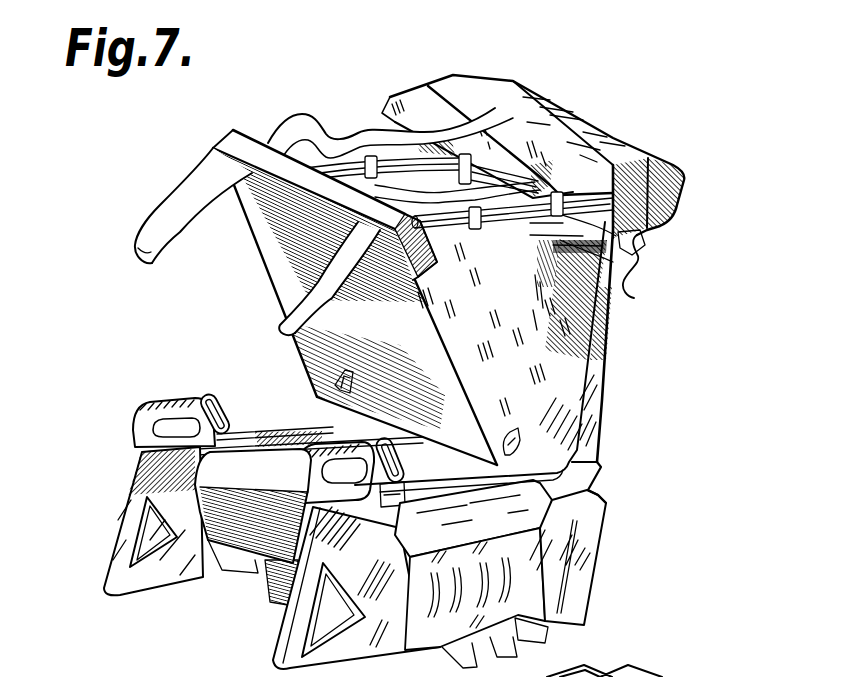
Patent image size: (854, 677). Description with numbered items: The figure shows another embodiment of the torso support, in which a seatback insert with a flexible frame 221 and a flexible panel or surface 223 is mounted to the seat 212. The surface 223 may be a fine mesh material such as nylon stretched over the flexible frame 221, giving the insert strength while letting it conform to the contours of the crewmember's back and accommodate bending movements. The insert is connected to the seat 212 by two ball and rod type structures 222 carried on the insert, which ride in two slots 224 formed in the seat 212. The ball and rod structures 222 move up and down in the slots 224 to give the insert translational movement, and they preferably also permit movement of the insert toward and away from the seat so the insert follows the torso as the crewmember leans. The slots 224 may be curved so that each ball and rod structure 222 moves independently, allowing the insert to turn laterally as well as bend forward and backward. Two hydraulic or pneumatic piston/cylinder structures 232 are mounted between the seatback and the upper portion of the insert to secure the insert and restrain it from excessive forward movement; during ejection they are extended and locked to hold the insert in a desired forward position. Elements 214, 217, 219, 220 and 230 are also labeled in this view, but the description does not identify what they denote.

The seat 212 is at (631, 503).
The seat cushion 214 is at (213, 475).
The belt buckles 217 is at (330, 410).
The rear housing 219 is at (634, 292).
The shoulder strap 220 is at (168, 220).
The flexible frame 221 is at (440, 323).
The ball and rod type structures 222 is at (507, 459).
The flexible panel or surface 223 is at (277, 282).
The slots 224 is at (510, 417).
The strap 230 is at (298, 117).
The hydraulic or pneumatic piston/cylinder structures 232 is at (645, 235).